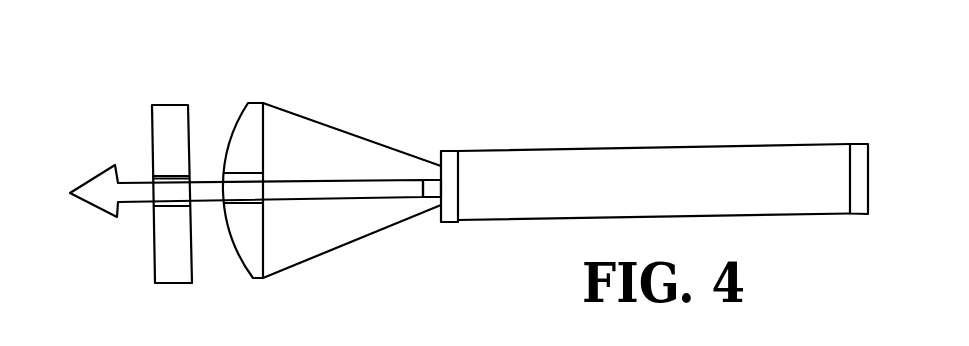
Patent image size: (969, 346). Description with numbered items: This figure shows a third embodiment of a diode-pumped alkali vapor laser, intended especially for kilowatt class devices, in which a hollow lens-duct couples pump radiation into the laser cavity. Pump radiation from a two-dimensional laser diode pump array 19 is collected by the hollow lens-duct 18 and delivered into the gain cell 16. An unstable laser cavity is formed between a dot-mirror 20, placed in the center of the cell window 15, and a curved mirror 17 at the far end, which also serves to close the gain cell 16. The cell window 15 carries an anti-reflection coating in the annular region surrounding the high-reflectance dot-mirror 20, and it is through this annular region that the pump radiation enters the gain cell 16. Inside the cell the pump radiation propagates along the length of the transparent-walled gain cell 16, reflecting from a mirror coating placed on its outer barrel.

The cell window 15 is at (453, 151).
The gain cell 16 is at (708, 147).
The curved mirror 17 is at (857, 144).
The hollow lens-duct 18 is at (347, 132).
The 2-D laser diode pump array 19 is at (153, 141).
The dot-mirror 20 is at (433, 183).